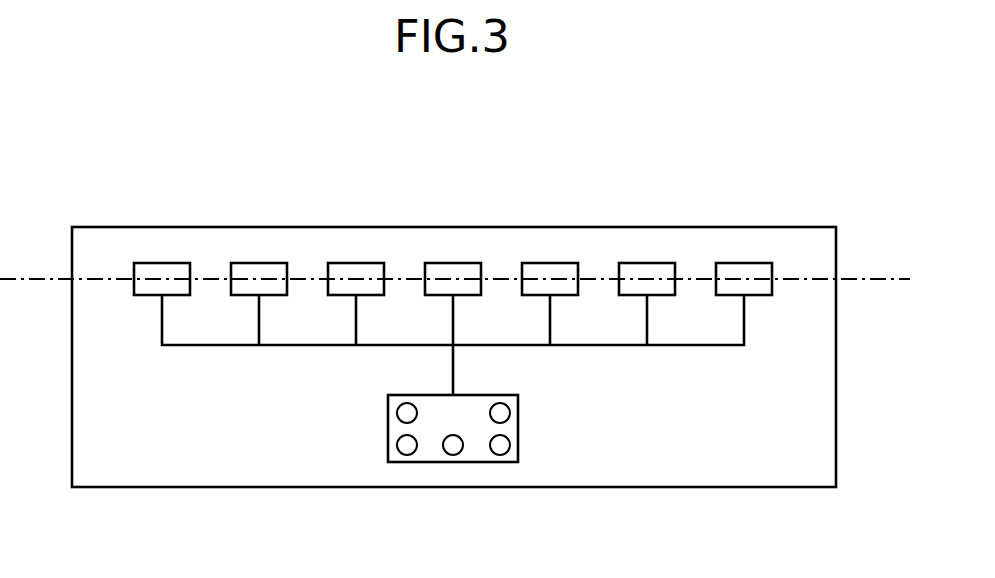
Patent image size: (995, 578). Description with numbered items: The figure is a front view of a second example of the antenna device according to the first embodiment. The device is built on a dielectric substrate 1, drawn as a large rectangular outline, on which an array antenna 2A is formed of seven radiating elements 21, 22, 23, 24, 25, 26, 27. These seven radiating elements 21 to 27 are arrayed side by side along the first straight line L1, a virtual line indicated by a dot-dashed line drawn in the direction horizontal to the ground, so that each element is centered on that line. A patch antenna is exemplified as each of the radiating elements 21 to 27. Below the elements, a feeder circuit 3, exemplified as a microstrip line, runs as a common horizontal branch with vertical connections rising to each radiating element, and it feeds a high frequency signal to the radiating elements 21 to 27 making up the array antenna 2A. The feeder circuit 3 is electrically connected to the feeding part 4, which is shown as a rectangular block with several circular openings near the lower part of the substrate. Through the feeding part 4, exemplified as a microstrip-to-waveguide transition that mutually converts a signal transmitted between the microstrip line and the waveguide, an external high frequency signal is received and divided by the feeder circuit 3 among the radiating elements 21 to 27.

The dielectric substrate 1 is at (72, 355).
The array antenna 2A is at (415, 182).
The feeder circuit 3 is at (308, 345).
The feeding part 4 is at (450, 462).
The radiating element 21 is at (160, 263).
The radiating element 22 is at (257, 263).
The radiating element 23 is at (354, 263).
The radiating element 24 is at (451, 263).
The radiating element 25 is at (548, 263).
The radiating element 26 is at (645, 263).
The radiating element 27 is at (742, 263).
The first straight line L1 is at (876, 279).